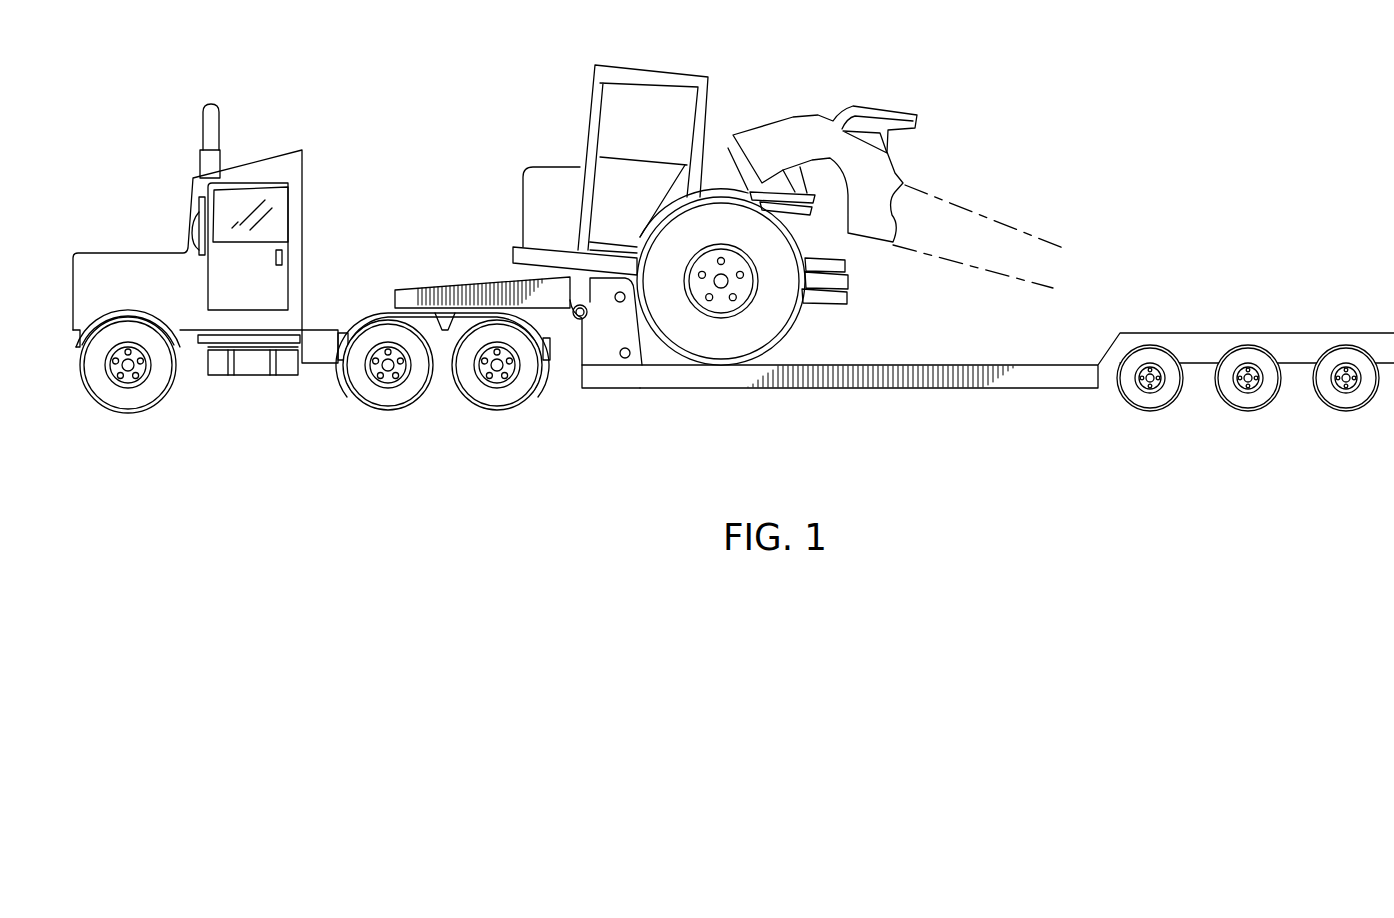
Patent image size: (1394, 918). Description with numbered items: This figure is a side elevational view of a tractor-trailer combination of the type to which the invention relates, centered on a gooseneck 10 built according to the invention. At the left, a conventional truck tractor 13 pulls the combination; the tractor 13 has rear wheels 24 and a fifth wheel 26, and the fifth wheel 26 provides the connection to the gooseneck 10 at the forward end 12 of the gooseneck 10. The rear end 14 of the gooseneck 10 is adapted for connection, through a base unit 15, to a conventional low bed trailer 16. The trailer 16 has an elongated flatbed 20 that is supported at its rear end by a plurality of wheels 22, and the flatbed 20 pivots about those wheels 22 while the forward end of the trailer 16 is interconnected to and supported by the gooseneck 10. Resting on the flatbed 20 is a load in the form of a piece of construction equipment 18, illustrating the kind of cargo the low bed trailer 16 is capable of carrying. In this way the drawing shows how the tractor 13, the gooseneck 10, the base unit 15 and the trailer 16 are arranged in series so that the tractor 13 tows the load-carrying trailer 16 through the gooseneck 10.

The gooseneck 10 is at (888, 339).
The forward end 12 is at (413, 285).
The truck tractor 13 is at (310, 170).
The rear end 14 is at (645, 347).
The base unit 15 is at (602, 357).
The low bed trailer 16 is at (876, 366).
The construction equipment 18 is at (585, 98).
The flatbed 20 is at (927, 363).
The wheels 22 is at (1330, 360).
The rear wheels 24 is at (368, 395).
The fifth wheel 26 is at (445, 372).